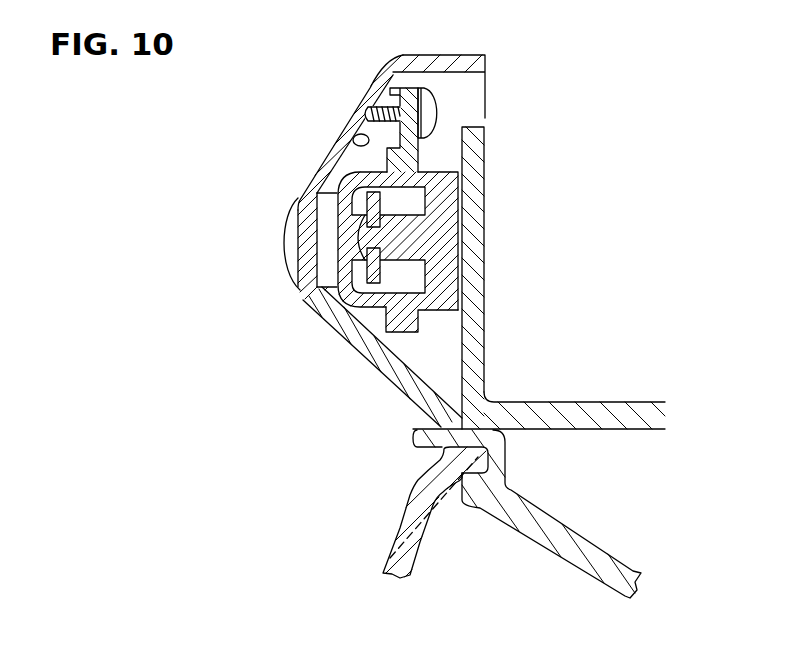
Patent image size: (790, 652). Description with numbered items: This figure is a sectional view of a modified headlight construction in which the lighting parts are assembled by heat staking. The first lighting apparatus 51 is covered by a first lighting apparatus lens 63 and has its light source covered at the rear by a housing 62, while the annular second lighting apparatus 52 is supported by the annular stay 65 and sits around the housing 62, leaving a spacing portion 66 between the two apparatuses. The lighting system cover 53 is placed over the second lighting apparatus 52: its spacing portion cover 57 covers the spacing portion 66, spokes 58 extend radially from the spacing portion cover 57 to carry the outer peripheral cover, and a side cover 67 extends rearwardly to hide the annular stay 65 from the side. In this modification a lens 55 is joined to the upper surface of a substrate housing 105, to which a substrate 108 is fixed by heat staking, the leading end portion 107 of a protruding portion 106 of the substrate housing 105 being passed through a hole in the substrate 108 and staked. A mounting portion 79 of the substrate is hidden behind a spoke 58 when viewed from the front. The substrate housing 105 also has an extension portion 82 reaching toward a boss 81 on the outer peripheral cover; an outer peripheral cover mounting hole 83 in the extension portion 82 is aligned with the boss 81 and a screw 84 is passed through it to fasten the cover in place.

The first lighting apparatus 51 is at (392, 511).
The second lighting apparatus 52 is at (286, 278).
The lighting system cover 53 is at (320, 322).
The lens 55 is at (285, 222).
The spacing portion cover 57 is at (379, 348).
The spoke 58 is at (298, 250).
The housing 62 is at (590, 532).
The first lighting apparatus lens 63 is at (390, 547).
The annular stay 65 is at (645, 402).
The spacing portion 66 is at (433, 366).
The side cover 67 is at (468, 55).
The mounting portion 79 is at (404, 272).
The boss 81 is at (341, 150).
The extension portion 82 is at (424, 138).
The outer peripheral cover mounting hole 83 is at (390, 104).
The screw 84 is at (441, 112).
The substrate housing 105 is at (438, 311).
The protruding portion 106 is at (410, 215).
The leading end portion 107 is at (368, 118).
The substrate 108 is at (364, 187).